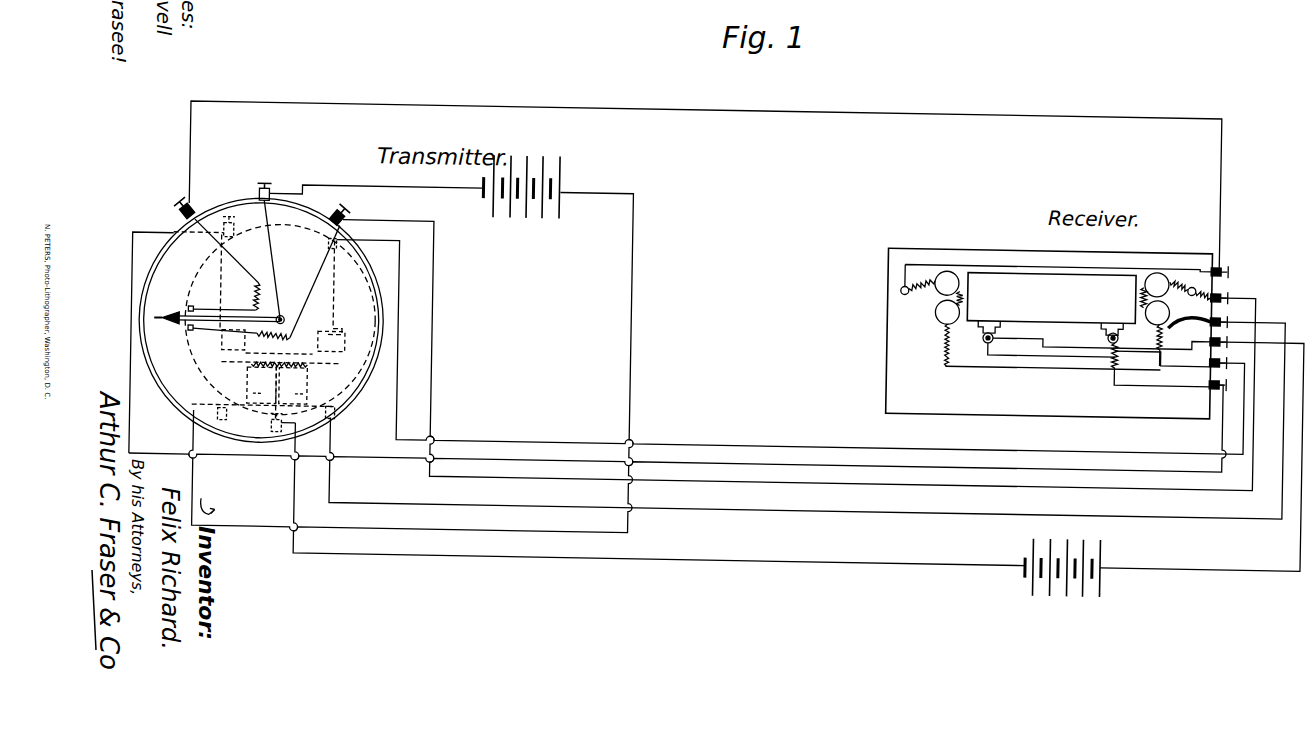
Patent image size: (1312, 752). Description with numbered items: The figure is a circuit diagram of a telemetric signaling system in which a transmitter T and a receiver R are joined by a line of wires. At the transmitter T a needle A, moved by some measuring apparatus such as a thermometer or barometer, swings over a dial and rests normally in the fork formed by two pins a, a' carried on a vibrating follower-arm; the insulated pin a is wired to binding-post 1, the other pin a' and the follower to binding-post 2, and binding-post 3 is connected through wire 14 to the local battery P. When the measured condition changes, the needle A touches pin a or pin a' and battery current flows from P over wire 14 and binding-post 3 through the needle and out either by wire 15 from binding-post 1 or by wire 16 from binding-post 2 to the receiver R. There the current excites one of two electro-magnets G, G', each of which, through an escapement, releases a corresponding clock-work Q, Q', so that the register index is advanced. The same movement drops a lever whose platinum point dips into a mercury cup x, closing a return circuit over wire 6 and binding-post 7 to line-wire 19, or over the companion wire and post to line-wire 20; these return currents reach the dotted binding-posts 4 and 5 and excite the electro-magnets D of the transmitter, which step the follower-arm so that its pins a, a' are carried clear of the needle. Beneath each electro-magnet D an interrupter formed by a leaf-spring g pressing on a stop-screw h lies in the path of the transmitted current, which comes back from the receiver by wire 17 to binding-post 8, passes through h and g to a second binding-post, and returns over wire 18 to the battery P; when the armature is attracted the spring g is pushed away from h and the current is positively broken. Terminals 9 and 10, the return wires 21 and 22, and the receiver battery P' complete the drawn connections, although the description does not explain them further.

The binding-post 1 is at (339, 212).
The binding-post 2 is at (180, 204).
The binding-post 3 is at (264, 184).
The binding-post 4 is at (234, 227).
The binding-post 5 is at (329, 247).
The wire 6 is at (1098, 365).
The binding-post 7 is at (1228, 336).
The binding-post 8 is at (282, 418).
The transmitter terminal 9 is at (275, 422).
The conductor 10 is at (140, 343).
The wire 14 is at (375, 183).
The wire 15 is at (804, 361).
The wire 16 is at (715, 177).
The wire 17 is at (807, 417).
The wire 18 is at (420, 361).
The wire 19 is at (686, 421).
The wire 20 is at (791, 345).
The battery conductor 21 is at (650, 506).
The battery conductor 22 is at (1202, 450).
The transmitter T is at (261, 320).
The needle A is at (220, 261).
The pins a is at (239, 313).
The electro-magnet D is at (283, 341).
The leaf-spring g is at (277, 383).
The stop-screw h is at (278, 398).
The local battery P is at (521, 177).
The receiver battery P' is at (1062, 580).
The receiver R is at (1049, 333).
The electro-magnet G is at (1038, 320).
The receiver magnet G' is at (1176, 320).
The clock-work mechanism Q is at (1051, 304).
The cup of mercury x is at (1090, 343).